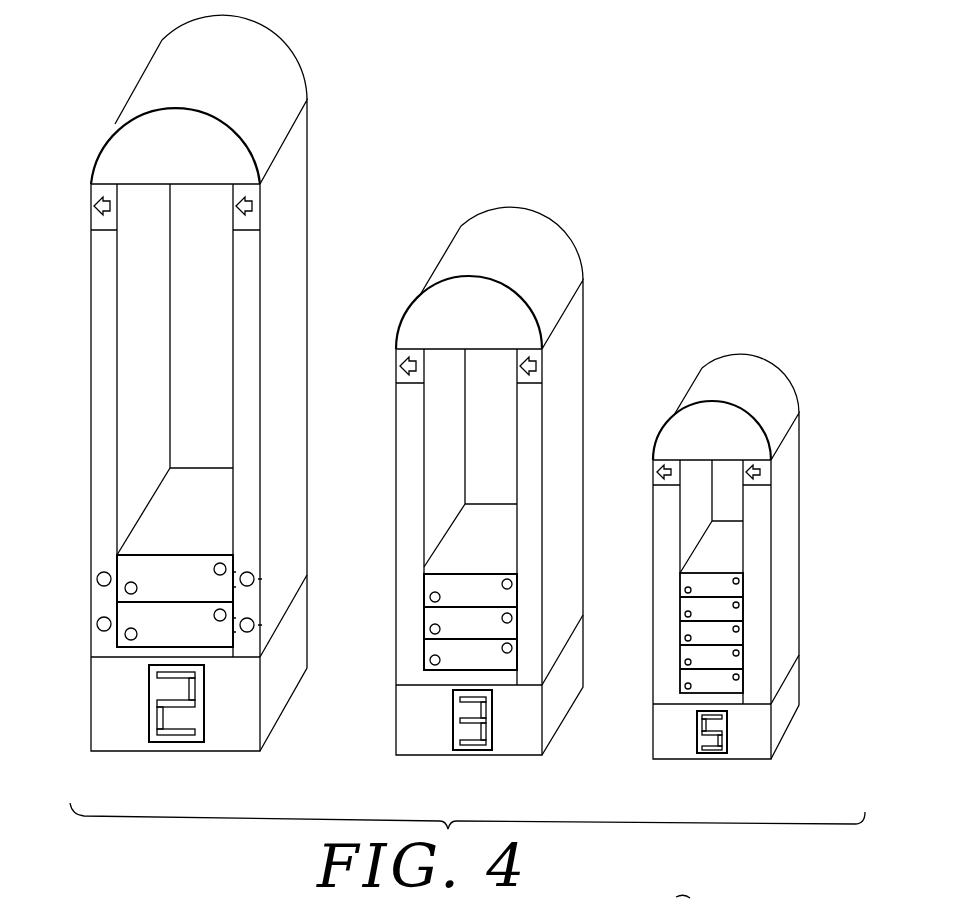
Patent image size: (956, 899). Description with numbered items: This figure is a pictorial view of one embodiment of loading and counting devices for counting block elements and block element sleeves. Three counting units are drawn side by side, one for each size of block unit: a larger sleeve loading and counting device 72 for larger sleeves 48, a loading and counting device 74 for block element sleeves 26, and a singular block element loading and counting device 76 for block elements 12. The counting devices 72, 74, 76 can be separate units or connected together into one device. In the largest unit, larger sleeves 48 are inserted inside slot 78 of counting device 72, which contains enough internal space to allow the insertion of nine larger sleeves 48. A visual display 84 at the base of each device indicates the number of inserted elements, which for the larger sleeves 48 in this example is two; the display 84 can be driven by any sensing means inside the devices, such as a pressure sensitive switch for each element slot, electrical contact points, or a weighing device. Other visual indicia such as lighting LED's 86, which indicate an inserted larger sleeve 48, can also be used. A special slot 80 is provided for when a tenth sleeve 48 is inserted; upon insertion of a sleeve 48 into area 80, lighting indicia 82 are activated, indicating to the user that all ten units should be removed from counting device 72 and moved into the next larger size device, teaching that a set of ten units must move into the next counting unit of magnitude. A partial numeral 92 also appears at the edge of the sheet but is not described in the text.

The loading and counting device 72 is at (200, 375).
The loading and counting device 74 is at (462, 465).
The singular block element loading and counting device 76 is at (703, 541).
The lighting indicia 82 is at (95, 206).
The special slot 80 is at (145, 207).
The slot 78 is at (150, 422).
The larger sleeve 48 is at (145, 618).
The lighting LED 86 is at (255, 628).
The visual display 84 is at (200, 740).
The block element sleeve 26 is at (435, 648).
The block element 12 is at (652, 573).
The partial reference 92 is at (744, 898).